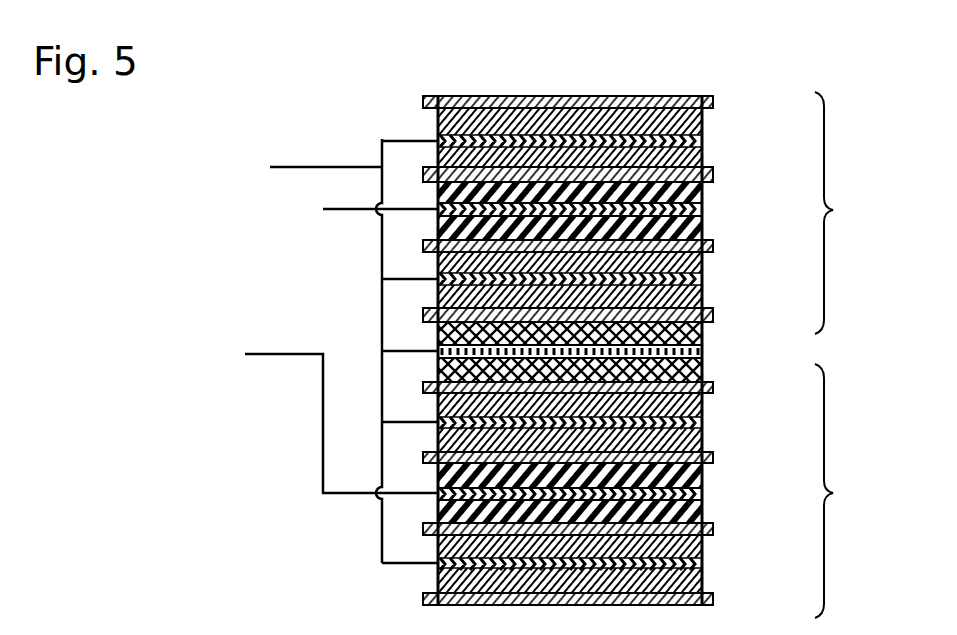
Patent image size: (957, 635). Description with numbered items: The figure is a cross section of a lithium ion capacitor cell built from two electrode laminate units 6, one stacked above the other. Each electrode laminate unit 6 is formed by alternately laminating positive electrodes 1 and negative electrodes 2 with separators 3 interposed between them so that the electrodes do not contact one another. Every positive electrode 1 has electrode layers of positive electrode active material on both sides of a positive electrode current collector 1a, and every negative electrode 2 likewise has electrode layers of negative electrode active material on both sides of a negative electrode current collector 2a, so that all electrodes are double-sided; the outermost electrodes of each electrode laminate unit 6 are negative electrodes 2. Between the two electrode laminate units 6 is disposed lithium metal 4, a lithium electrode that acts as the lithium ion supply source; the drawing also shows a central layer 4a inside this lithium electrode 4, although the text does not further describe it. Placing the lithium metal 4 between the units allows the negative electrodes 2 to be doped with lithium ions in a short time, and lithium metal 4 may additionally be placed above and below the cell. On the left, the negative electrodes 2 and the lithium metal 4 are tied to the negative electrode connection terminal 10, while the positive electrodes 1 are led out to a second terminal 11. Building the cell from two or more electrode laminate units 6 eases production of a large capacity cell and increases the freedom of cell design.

The positive electrode 1 is at (770, 515).
The positive electrode current collector 1a is at (722, 496).
The negative electrode 2 is at (770, 585).
The negative electrode current collector 2a is at (722, 566).
The separator 3 is at (790, 602).
The lithium metal 4 is at (702, 336).
The internal electrode of intermediate layer 4a is at (702, 352).
The electrode laminate unit 6 is at (840, 355).
The negative electrode connection terminal 10 is at (280, 348).
The second wiring / terminal 11 is at (307, 166).